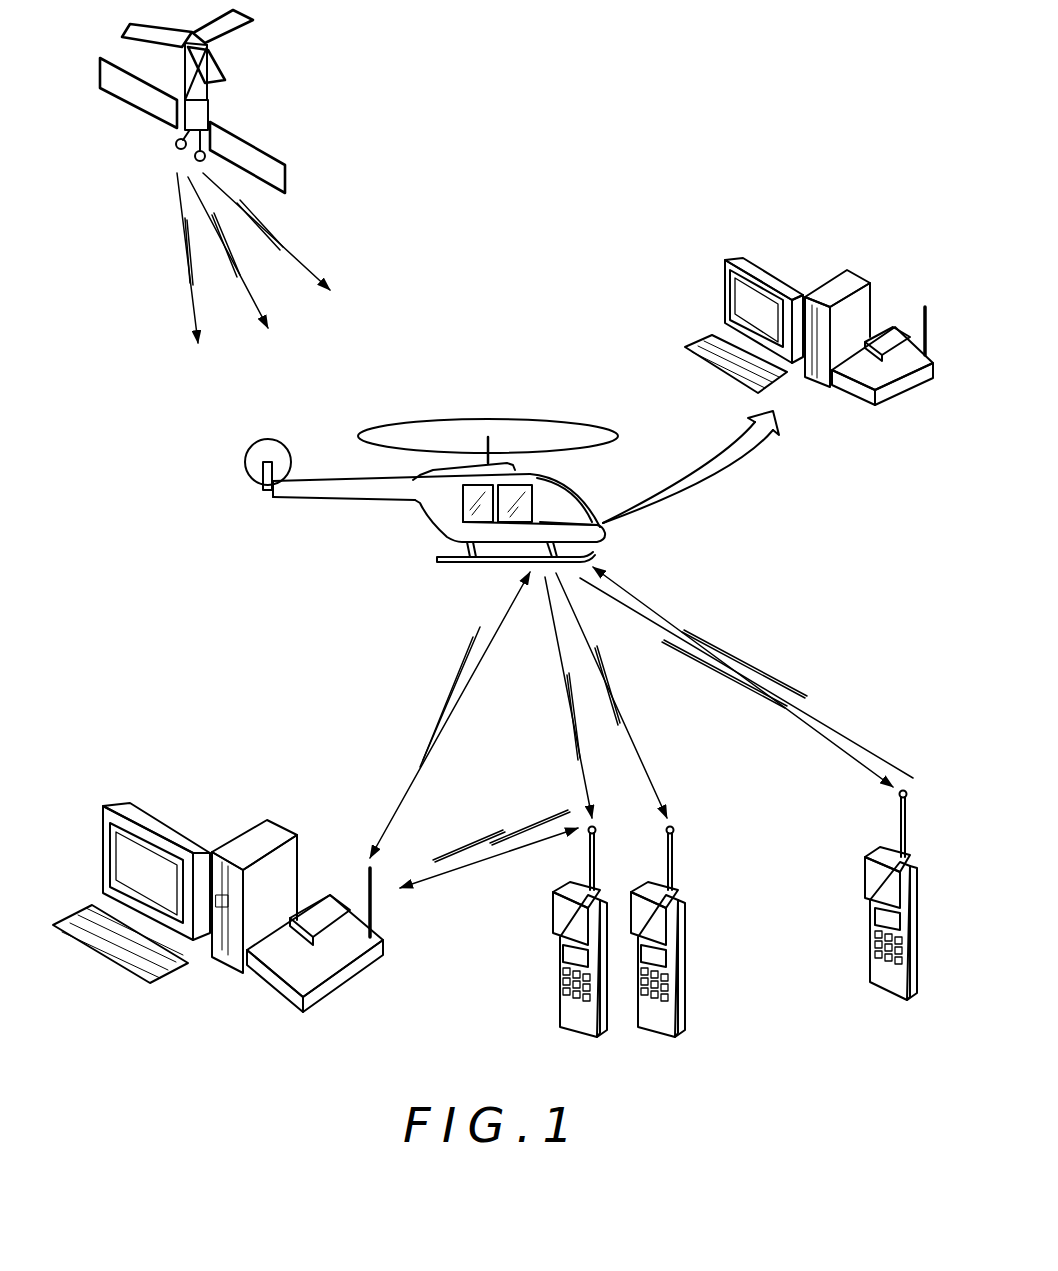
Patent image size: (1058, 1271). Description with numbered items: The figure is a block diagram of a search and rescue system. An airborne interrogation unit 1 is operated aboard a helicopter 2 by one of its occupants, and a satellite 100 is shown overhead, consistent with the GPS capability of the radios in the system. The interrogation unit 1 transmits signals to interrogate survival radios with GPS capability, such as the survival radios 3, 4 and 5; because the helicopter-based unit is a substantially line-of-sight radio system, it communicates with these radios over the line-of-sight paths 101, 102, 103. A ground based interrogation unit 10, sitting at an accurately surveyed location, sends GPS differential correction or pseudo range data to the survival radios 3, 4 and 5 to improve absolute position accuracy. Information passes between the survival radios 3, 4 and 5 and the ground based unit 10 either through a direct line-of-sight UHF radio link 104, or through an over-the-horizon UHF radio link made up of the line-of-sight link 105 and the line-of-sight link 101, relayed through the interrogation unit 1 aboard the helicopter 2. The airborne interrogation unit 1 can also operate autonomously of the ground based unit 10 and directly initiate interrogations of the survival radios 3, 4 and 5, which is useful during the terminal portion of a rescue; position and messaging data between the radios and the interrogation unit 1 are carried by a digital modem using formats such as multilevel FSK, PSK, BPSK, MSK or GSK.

The satellite 100 is at (152, 107).
The airborne interrogation unit 1 is at (705, 257).
The helicopter 2 is at (345, 500).
The ground based interrogation unit 10 is at (253, 842).
The survival radio 3 is at (883, 883).
The survival radio 4 is at (675, 1013).
The survival radio 5 is at (572, 1010).
The LOS path 101 is at (828, 722).
The LOS path 102 is at (640, 748).
The LOS path 103 is at (558, 667).
The direct LOS UHF radio link 104 is at (492, 870).
The LOS link 105 is at (408, 777).